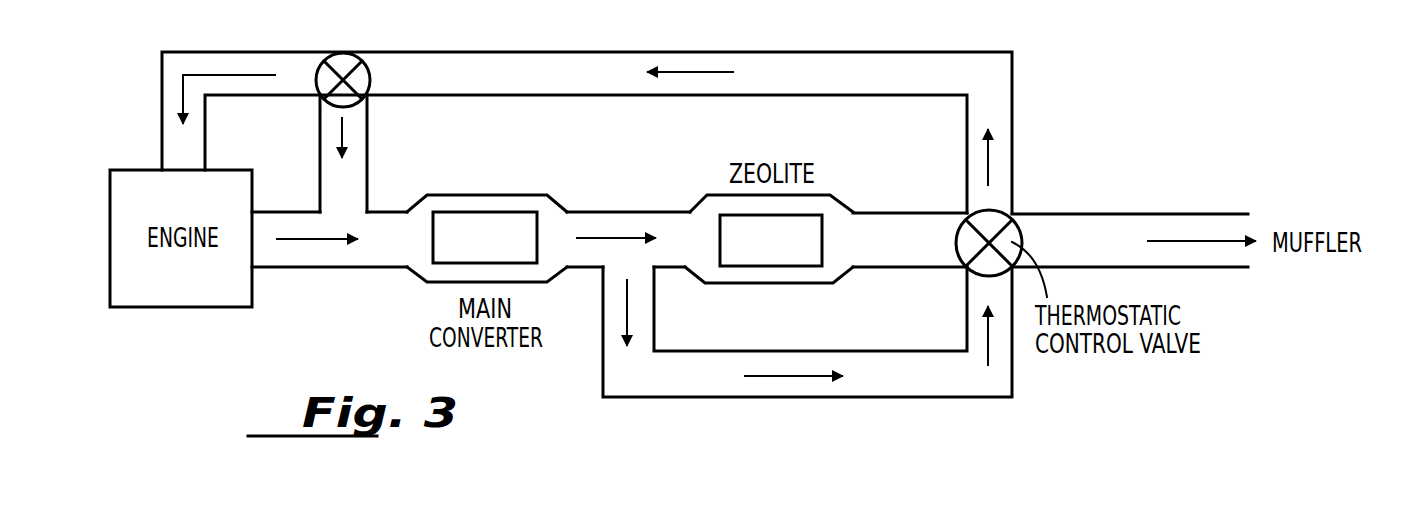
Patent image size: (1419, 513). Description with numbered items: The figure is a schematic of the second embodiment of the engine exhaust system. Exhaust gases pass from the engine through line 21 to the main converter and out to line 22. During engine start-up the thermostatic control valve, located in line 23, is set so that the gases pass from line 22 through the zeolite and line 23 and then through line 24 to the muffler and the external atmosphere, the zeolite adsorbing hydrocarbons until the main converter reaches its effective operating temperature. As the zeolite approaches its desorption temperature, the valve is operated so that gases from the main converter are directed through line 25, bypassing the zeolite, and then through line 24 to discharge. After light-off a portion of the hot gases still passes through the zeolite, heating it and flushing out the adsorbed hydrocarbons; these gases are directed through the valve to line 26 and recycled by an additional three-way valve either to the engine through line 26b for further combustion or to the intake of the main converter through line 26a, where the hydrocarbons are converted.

The line 21 is at (363, 257).
The line 22 is at (638, 214).
The line 23 is at (907, 223).
The line 24 is at (1155, 222).
The line 25 is at (810, 360).
The line 26 is at (795, 67).
The line 26a is at (358, 163).
The line 26b is at (248, 63).